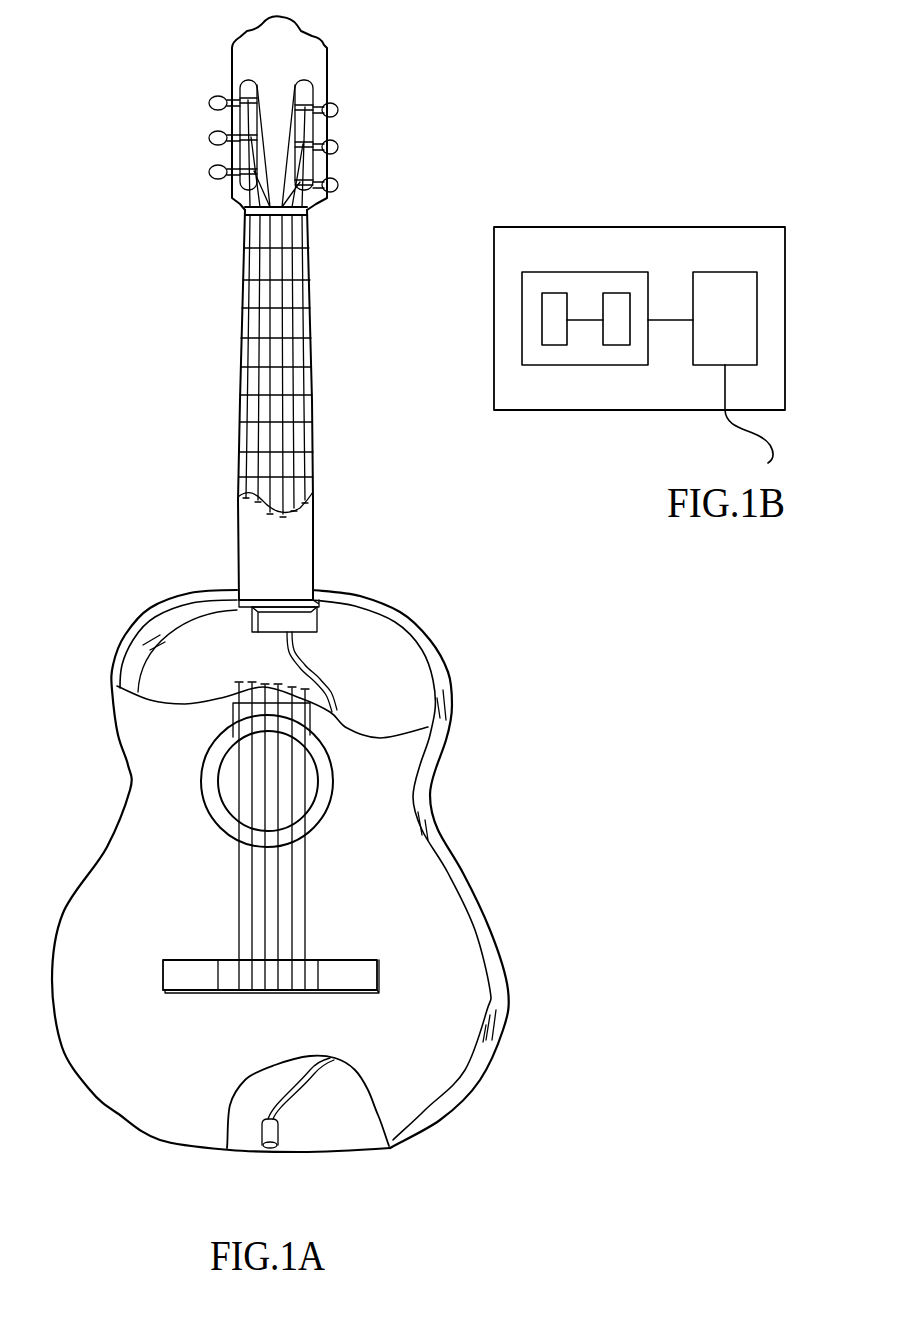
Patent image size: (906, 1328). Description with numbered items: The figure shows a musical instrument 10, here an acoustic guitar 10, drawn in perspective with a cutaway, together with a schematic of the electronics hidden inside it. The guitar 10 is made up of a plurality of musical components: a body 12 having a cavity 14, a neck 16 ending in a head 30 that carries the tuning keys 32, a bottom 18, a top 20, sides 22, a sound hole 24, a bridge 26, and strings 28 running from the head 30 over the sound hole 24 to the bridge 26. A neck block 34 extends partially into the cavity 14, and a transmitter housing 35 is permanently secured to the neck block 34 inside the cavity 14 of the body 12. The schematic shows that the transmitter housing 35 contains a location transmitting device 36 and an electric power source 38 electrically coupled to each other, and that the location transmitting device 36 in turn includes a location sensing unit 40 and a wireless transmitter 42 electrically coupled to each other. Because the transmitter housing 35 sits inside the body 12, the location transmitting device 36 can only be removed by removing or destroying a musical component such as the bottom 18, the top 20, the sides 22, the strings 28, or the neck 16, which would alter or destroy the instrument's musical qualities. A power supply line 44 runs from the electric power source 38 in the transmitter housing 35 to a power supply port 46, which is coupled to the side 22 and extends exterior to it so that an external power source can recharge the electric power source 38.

In FIG. 1A, the musical instrument 10 is at (75, 400).
In FIG. 1A, the body 12 is at (220, 452).
In FIG. 1A, the cavity 14 is at (395, 686).
In FIG. 1A, the neck 16 is at (288, 550).
In FIG. 1A, the bottom 18 is at (402, 713).
In FIG. 1A, the top 20 is at (113, 1058).
In FIG. 1A, the sides 22 is at (472, 1083).
In FIG. 1A, the sound hole 24 is at (312, 767).
In FIG. 1A, the bridge 26 is at (360, 973).
In FIG. 1A, the strings 28 is at (297, 348).
In FIG. 1A, the head 30 is at (272, 50).
In FIG. 1A, the tuning keys 32 is at (210, 160).
In FIG. 1A, the neck block 34 is at (325, 602).
In FIG. 1A, the transmitter housing 35 is at (317, 623).
In FIG. 1B, the transmitter housing 35 is at (700, 227).
In FIG. 1B, the location transmitting device 36 is at (587, 365).
In FIG. 1B, the electric power source 38 is at (757, 310).
In FIG. 1B, the location sensing unit 40 is at (555, 293).
In FIG. 1B, the wireless transmitter 42 is at (615, 293).
In FIG. 1A, the power supply line 44 is at (327, 685).
In FIG. 1B, the power supply line 44 is at (763, 439).
In FIG. 1A, the power supply port 46 is at (268, 1152).